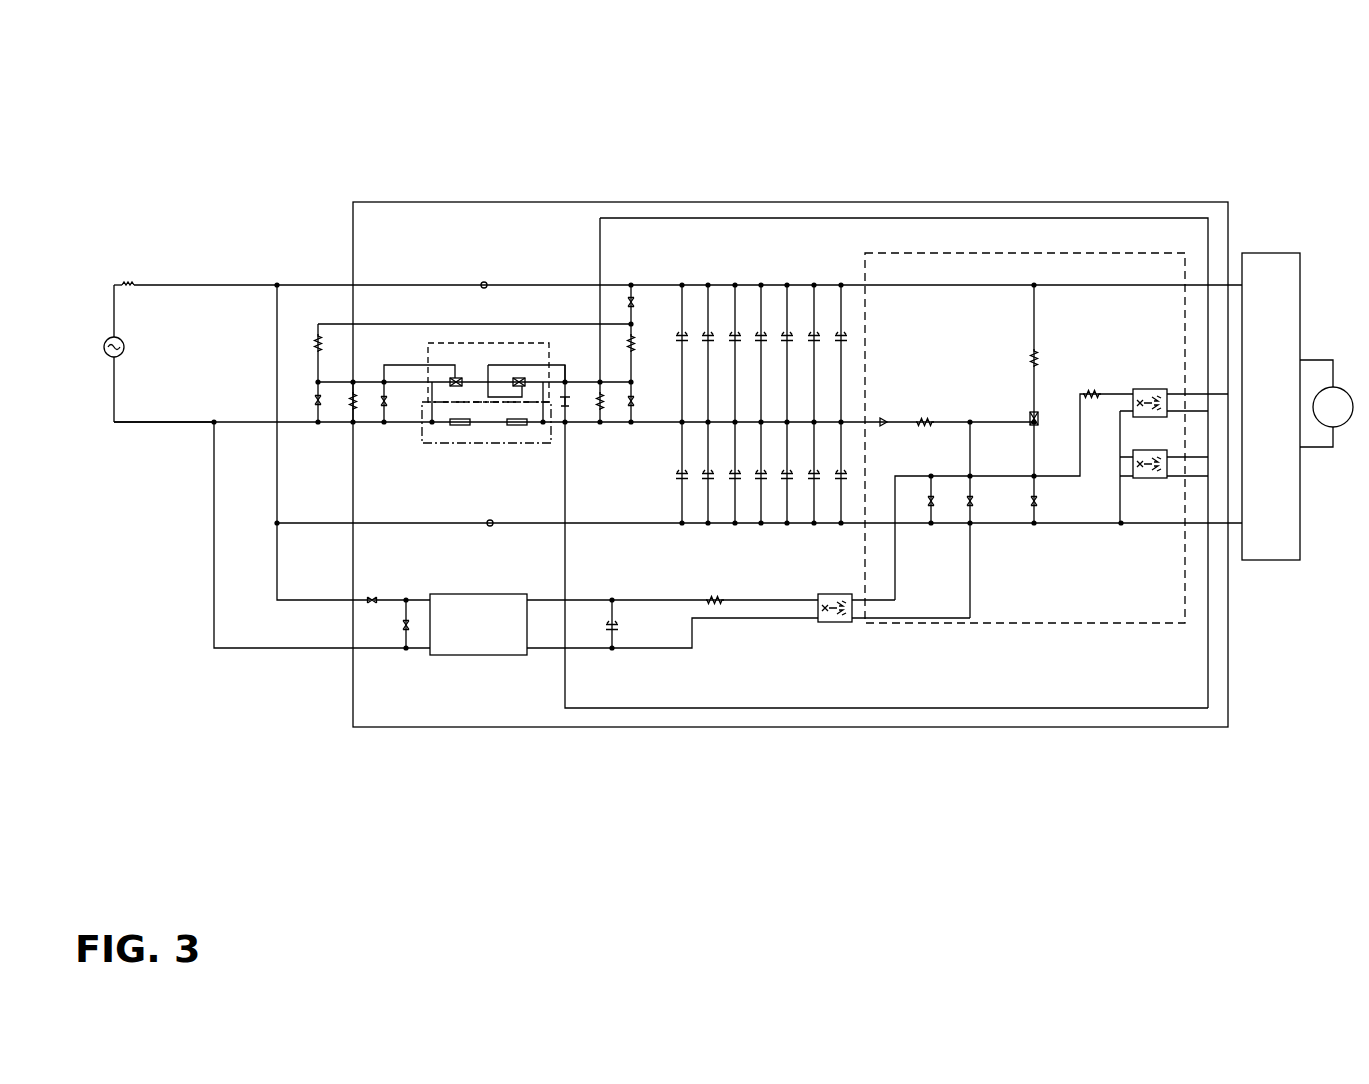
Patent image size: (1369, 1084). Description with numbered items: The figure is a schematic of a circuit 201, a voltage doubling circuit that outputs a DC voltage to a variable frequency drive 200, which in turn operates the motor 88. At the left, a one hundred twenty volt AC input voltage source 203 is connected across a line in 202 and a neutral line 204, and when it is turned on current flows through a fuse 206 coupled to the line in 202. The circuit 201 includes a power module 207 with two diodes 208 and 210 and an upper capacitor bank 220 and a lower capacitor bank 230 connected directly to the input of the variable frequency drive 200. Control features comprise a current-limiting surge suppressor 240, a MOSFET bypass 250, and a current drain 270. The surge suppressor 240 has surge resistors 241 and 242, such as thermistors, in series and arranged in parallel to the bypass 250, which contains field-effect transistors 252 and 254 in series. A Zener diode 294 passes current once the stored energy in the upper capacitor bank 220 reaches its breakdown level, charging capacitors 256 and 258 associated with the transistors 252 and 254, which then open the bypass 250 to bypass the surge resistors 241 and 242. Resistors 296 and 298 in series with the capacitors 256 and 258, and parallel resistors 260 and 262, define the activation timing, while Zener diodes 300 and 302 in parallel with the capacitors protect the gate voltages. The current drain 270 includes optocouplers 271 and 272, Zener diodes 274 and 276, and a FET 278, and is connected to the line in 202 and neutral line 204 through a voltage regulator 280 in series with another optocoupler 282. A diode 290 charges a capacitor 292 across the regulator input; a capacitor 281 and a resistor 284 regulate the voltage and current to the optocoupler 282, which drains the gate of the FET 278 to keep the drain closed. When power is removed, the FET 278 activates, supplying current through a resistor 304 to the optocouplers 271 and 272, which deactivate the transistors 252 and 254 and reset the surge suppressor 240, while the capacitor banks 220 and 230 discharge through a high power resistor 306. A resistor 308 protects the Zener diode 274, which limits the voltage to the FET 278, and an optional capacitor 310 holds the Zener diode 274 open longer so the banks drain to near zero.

The motor 88 is at (1326, 403).
The variable frequency drive 200 is at (1272, 252).
The circuit 201 is at (1065, 74).
The line in 202 is at (113, 282).
The input voltage source 203 is at (103, 347).
The neutral line 204 is at (113, 424).
The fuse 206 is at (136, 280).
The power module 207 is at (541, 248).
The diode 208 is at (483, 281).
The diode 210 is at (489, 527).
The upper capacitor bank 220 is at (740, 277).
The lower capacitor bank 230 is at (762, 534).
The current-limiting surge suppressor 240 is at (422, 445).
The surge resistor 241 is at (457, 427).
The surge resistor 242 is at (517, 427).
The MOSFET bypass 250 is at (483, 342).
The field-effect transistor 252 is at (454, 376).
The field-effect transistor 254 is at (522, 376).
The capacitor 256 is at (313, 398).
The capacitor 258 is at (567, 410).
The resistor 260 is at (352, 410).
The resistor 262 is at (602, 411).
The current drain 270 is at (1083, 254).
The optocoupler 271 is at (1146, 388).
The optocoupler 272 is at (1147, 480).
The Zener diode 274 is at (973, 509).
The Zener diode 276 is at (1036, 509).
The FET 278 is at (1027, 417).
The voltage regulator 280 is at (478, 658).
The capacitor 281 is at (616, 636).
The optocoupler 282 is at (836, 623).
The resistor 284 is at (715, 605).
The diode 290 is at (371, 594).
The capacitor 292 is at (402, 626).
The Zener diode 294 is at (634, 299).
The resistor 296 is at (315, 342).
The resistor 298 is at (635, 352).
The Zener diode 300 is at (383, 392).
The Zener diode 302 is at (635, 405).
The resistor 304 is at (1083, 389).
The high power resistor 306 is at (1031, 356).
The resistor 308 is at (925, 416).
The capacitor 310 is at (930, 509).